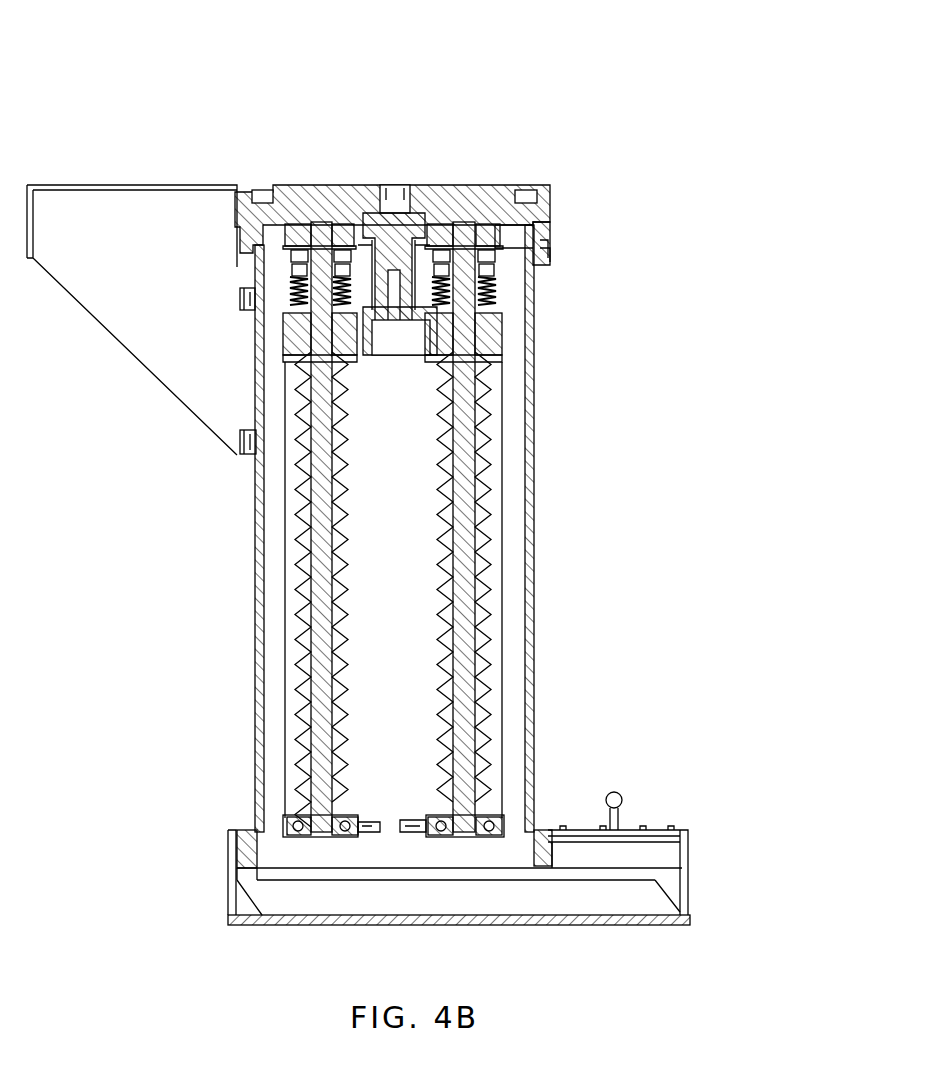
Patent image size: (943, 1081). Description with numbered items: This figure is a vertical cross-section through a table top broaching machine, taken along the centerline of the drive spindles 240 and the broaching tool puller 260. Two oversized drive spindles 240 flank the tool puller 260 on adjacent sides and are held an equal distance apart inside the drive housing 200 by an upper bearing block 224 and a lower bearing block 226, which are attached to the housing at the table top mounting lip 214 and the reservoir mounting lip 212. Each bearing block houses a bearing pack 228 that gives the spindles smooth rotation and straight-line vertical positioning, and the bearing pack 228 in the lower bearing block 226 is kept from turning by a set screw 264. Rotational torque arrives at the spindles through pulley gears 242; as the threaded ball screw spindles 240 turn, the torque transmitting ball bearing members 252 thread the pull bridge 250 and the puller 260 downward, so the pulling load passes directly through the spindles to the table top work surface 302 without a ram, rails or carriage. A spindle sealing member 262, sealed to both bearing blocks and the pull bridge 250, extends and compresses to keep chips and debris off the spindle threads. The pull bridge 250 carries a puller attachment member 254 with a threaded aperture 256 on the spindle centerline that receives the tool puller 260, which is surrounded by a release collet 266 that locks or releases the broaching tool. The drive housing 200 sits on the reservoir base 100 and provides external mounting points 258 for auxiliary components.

The reservoir base 100 is at (750, 885).
The drive housing 200 is at (535, 715).
The reservoir mounting lip 212 is at (543, 823).
The table top mounting lip 214 is at (550, 248).
The upper bearing block 224 is at (303, 262).
The lower bearing block 226 is at (303, 833).
The bearing pack 228 is at (302, 271).
The drive spindle 240 is at (469, 185).
The pulley gear 242 is at (287, 185).
The pull bridge 250 is at (290, 355).
The torque transmitting member 252 is at (290, 344).
The puller attachment member 254 is at (488, 226).
The aperture 256 is at (392, 298).
The external mounting point 258 is at (252, 308).
The broaching tool puller 260 is at (395, 185).
The spindle sealing member 262 is at (487, 291).
The set screw 264 is at (408, 824).
The release collet 266 is at (418, 185).
The table top work surface 302 is at (310, 185).